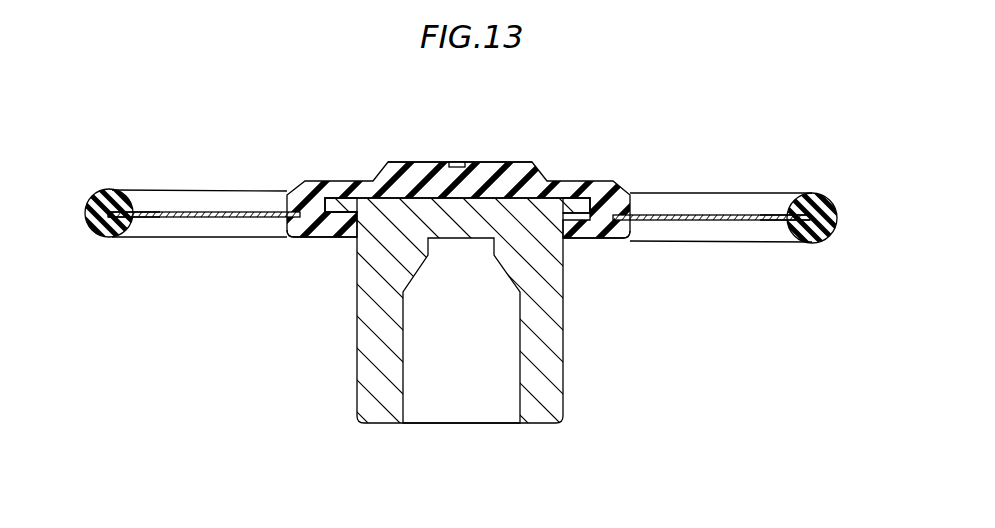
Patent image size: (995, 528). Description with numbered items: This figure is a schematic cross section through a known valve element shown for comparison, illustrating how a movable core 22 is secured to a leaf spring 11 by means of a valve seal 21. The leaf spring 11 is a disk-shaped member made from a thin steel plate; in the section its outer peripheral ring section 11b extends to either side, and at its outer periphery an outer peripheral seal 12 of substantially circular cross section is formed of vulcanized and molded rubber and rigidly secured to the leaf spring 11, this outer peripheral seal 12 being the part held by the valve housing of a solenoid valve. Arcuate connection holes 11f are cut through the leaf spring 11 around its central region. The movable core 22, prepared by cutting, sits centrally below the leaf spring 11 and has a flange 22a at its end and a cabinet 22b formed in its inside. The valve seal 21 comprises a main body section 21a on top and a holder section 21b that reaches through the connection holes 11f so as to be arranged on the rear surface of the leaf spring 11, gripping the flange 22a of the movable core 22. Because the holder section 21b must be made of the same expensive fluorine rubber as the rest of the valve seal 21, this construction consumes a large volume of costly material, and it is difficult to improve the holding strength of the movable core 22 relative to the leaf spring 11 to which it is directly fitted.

The leaf spring 11 is at (719, 207).
The outer peripheral ring section 11b is at (148, 212).
The connection holes 11f is at (293, 238).
The outer peripheral seal 12 is at (100, 232).
The valve seal 21 is at (429, 140).
The main body section 21a is at (493, 162).
The holder section 21b is at (333, 228).
The movable core 22 is at (553, 378).
The flange 22a is at (573, 207).
The cabinet 22b is at (347, 200).